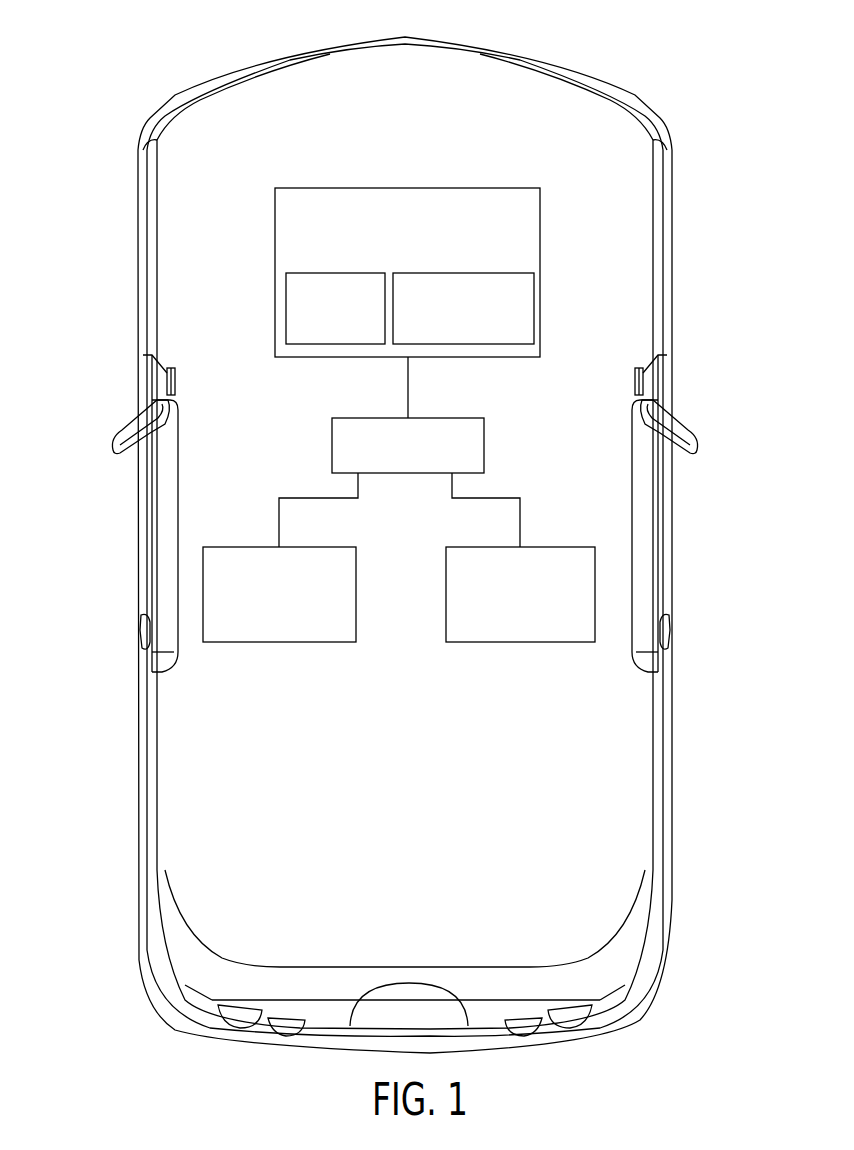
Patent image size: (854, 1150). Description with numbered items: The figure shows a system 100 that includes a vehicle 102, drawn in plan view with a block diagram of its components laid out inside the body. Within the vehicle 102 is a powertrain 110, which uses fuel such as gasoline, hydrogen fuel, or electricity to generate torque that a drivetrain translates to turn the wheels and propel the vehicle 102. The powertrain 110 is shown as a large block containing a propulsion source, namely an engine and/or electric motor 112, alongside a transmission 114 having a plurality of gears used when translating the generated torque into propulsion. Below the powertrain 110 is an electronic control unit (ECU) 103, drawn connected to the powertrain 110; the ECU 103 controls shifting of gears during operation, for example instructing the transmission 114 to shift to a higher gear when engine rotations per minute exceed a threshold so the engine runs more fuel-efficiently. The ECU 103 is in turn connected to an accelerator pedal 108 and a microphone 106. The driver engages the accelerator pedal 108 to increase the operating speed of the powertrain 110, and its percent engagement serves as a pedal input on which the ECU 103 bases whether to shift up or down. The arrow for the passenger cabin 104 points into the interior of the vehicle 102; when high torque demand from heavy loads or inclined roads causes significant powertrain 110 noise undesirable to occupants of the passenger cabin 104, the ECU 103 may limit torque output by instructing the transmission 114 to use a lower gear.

The system 100 is at (97, 72).
The vehicle 102 is at (673, 181).
The electronic control unit (ECU) 103 is at (485, 443).
The passenger cabin 104 is at (223, 775).
The microphone 106 is at (562, 546).
The accelerator pedal 108 is at (250, 546).
The powertrain 110 is at (541, 237).
The engine and/or electric motor 112 is at (284, 308).
The transmission 114 is at (536, 305).